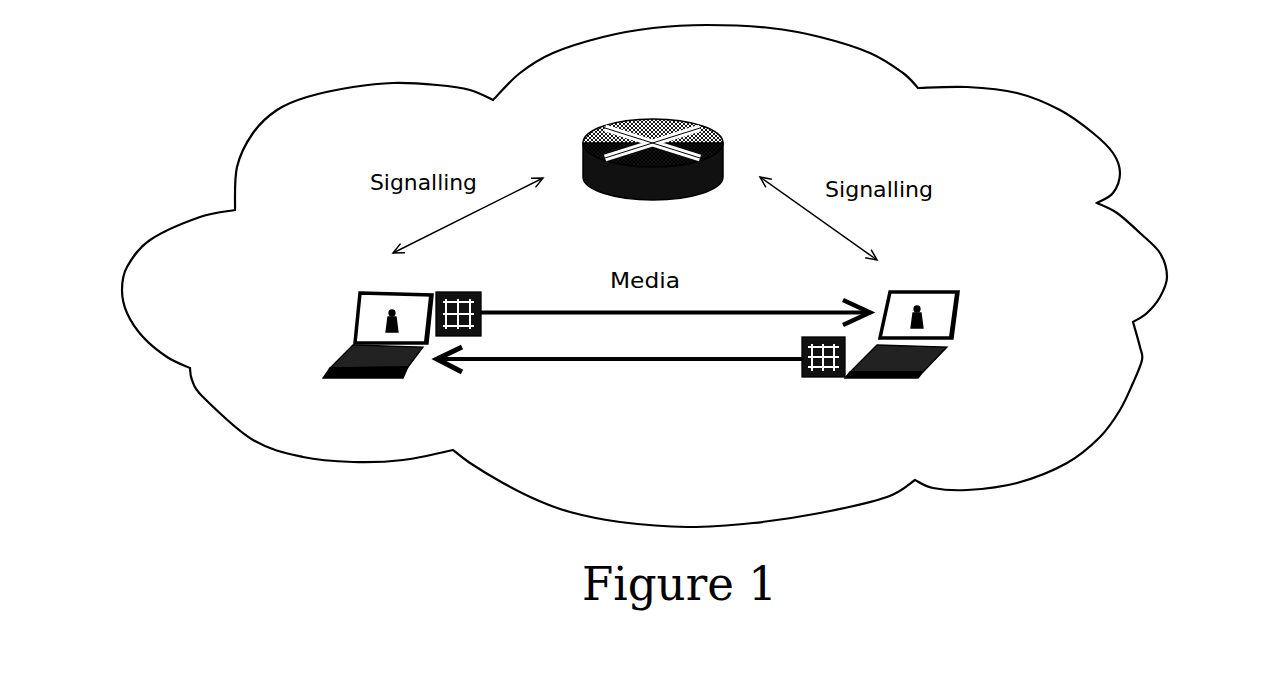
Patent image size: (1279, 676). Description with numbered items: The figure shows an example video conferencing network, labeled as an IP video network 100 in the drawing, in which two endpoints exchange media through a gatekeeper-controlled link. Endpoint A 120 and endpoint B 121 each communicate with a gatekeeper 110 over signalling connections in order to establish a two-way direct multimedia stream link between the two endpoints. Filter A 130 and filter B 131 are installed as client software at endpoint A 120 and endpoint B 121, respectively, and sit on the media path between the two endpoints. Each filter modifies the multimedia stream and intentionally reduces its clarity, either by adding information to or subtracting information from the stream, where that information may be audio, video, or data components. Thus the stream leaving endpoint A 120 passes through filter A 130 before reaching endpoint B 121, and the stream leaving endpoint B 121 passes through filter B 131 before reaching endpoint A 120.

The IP video network 100 is at (1124, 133).
The gatekeeper 110 is at (737, 137).
The endpoint A 120 is at (338, 336).
The endpoint B 121 is at (952, 353).
The filter A 130 is at (480, 341).
The filter B 131 is at (824, 382).